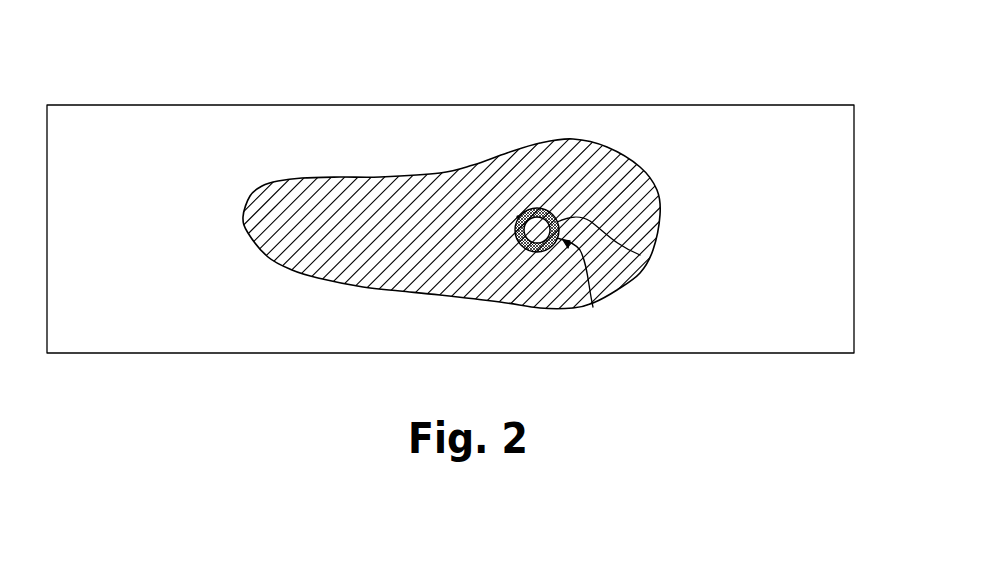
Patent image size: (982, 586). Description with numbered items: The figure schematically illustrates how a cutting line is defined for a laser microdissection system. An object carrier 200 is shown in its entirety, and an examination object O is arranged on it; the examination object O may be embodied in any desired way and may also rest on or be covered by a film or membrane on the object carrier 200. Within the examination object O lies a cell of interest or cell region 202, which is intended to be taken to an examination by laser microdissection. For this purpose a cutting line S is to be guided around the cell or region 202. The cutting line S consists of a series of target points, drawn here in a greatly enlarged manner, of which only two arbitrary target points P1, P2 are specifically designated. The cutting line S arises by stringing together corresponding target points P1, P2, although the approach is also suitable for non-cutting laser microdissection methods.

The object carrier 200 is at (796, 83).
The cell or cell region 202 is at (529, 208).
The examination object O is at (583, 157).
The target point P1 is at (517, 216).
The target point P2 is at (640, 255).
The cutting line S is at (593, 307).